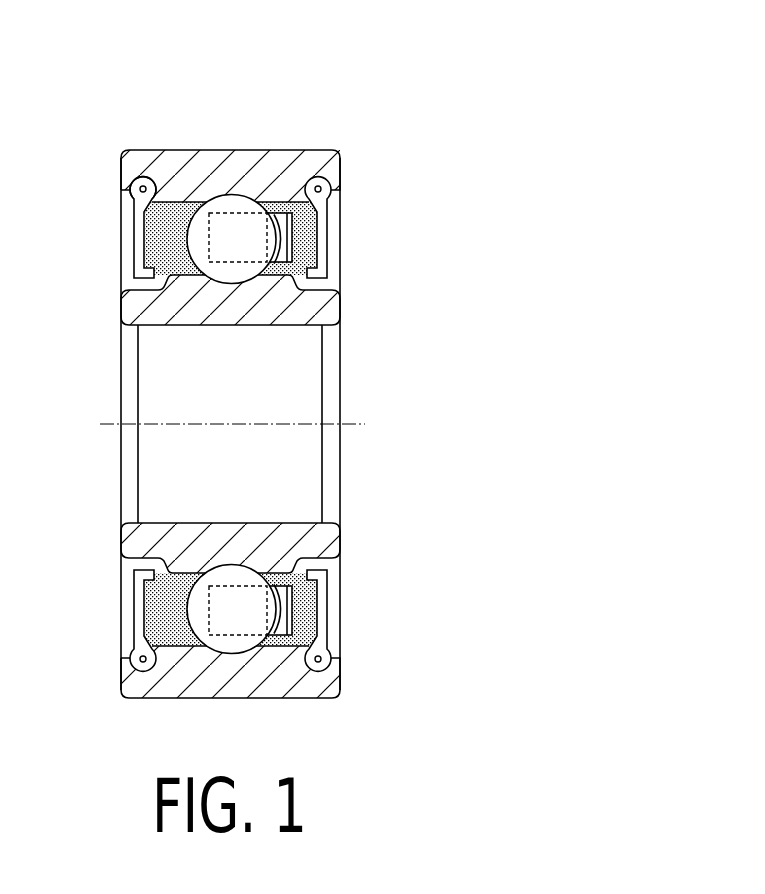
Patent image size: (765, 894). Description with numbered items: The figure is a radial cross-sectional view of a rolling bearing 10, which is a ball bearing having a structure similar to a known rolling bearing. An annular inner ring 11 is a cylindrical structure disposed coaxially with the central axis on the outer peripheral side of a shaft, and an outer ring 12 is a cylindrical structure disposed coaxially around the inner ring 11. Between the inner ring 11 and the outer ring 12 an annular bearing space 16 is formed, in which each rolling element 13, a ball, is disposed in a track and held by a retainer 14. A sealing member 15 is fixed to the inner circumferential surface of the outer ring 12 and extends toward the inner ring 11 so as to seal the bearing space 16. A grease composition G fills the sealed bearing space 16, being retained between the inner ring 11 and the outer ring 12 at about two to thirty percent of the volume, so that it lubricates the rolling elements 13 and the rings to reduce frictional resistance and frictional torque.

The rolling bearing 10 is at (335, 70).
The inner ring 11 is at (330, 307).
The outer ring 12 is at (330, 164).
The rolling element 13 is at (230, 204).
The retainer 14 is at (274, 208).
The sealing member 15 is at (323, 231).
The bearing space 16 is at (158, 218).
The grease composition G is at (150, 238).